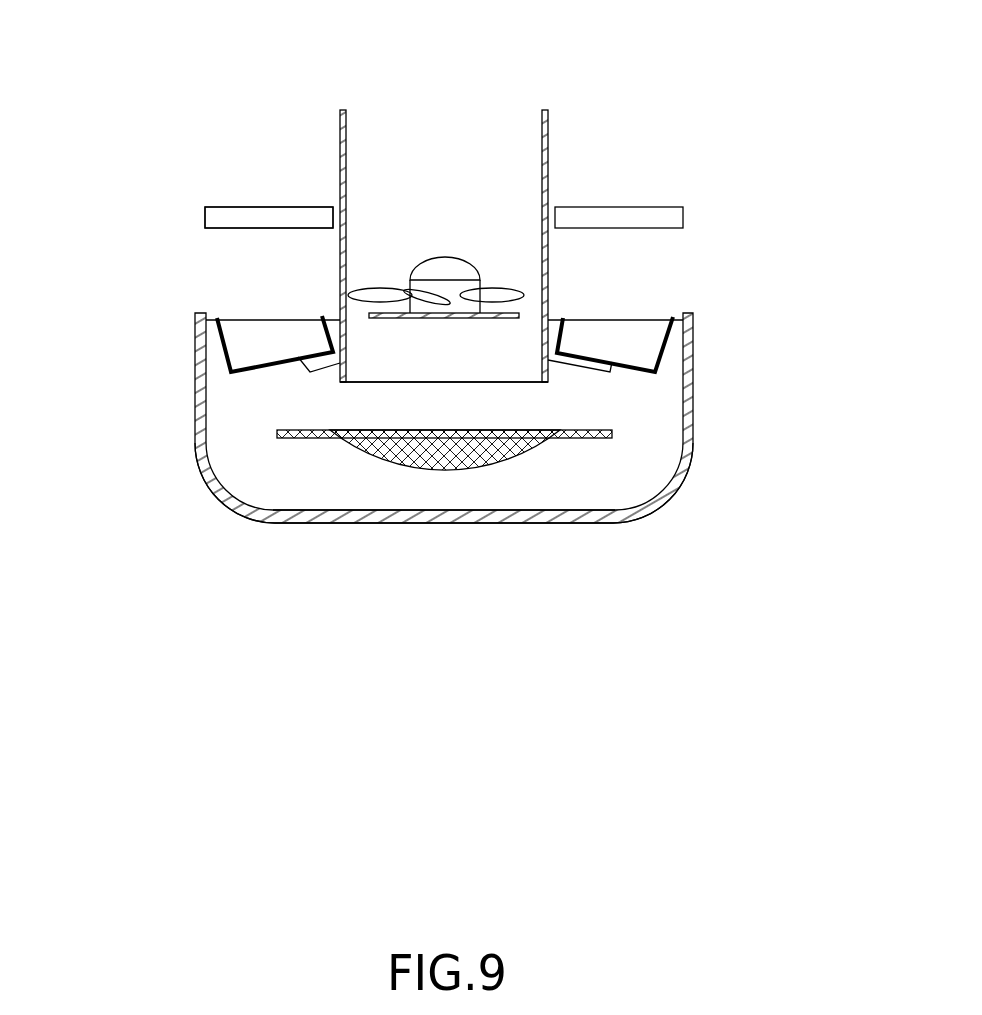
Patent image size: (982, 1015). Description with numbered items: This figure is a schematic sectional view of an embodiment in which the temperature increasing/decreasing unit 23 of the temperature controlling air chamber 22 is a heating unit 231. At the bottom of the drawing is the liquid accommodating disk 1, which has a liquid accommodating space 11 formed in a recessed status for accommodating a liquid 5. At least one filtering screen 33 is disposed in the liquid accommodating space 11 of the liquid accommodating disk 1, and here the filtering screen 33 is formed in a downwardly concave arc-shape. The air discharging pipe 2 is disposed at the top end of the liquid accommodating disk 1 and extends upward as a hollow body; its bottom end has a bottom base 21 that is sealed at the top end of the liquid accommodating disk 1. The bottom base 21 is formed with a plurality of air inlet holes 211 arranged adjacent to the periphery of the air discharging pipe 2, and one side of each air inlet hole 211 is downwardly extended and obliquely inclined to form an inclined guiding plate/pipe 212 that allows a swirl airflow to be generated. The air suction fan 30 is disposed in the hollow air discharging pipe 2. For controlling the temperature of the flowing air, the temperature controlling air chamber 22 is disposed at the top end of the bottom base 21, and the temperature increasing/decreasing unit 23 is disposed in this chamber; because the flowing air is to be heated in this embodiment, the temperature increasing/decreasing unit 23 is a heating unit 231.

The liquid accommodating disk 1 is at (726, 427).
The liquid accommodating space 11 is at (668, 493).
The air discharging pipe 2 is at (351, 91).
The bottom base 21 is at (203, 345).
The air inlet hole 211 is at (222, 311).
The inclined guiding plate/pipe 212 is at (650, 330).
The temperature controlling air chamber 22 is at (200, 246).
The temperature increasing/decreasing unit 23 is at (264, 168).
The heating unit 231 is at (223, 212).
The air suction fan 30 is at (505, 292).
The filtering screen 33 is at (367, 457).
The liquid 5 is at (518, 490).